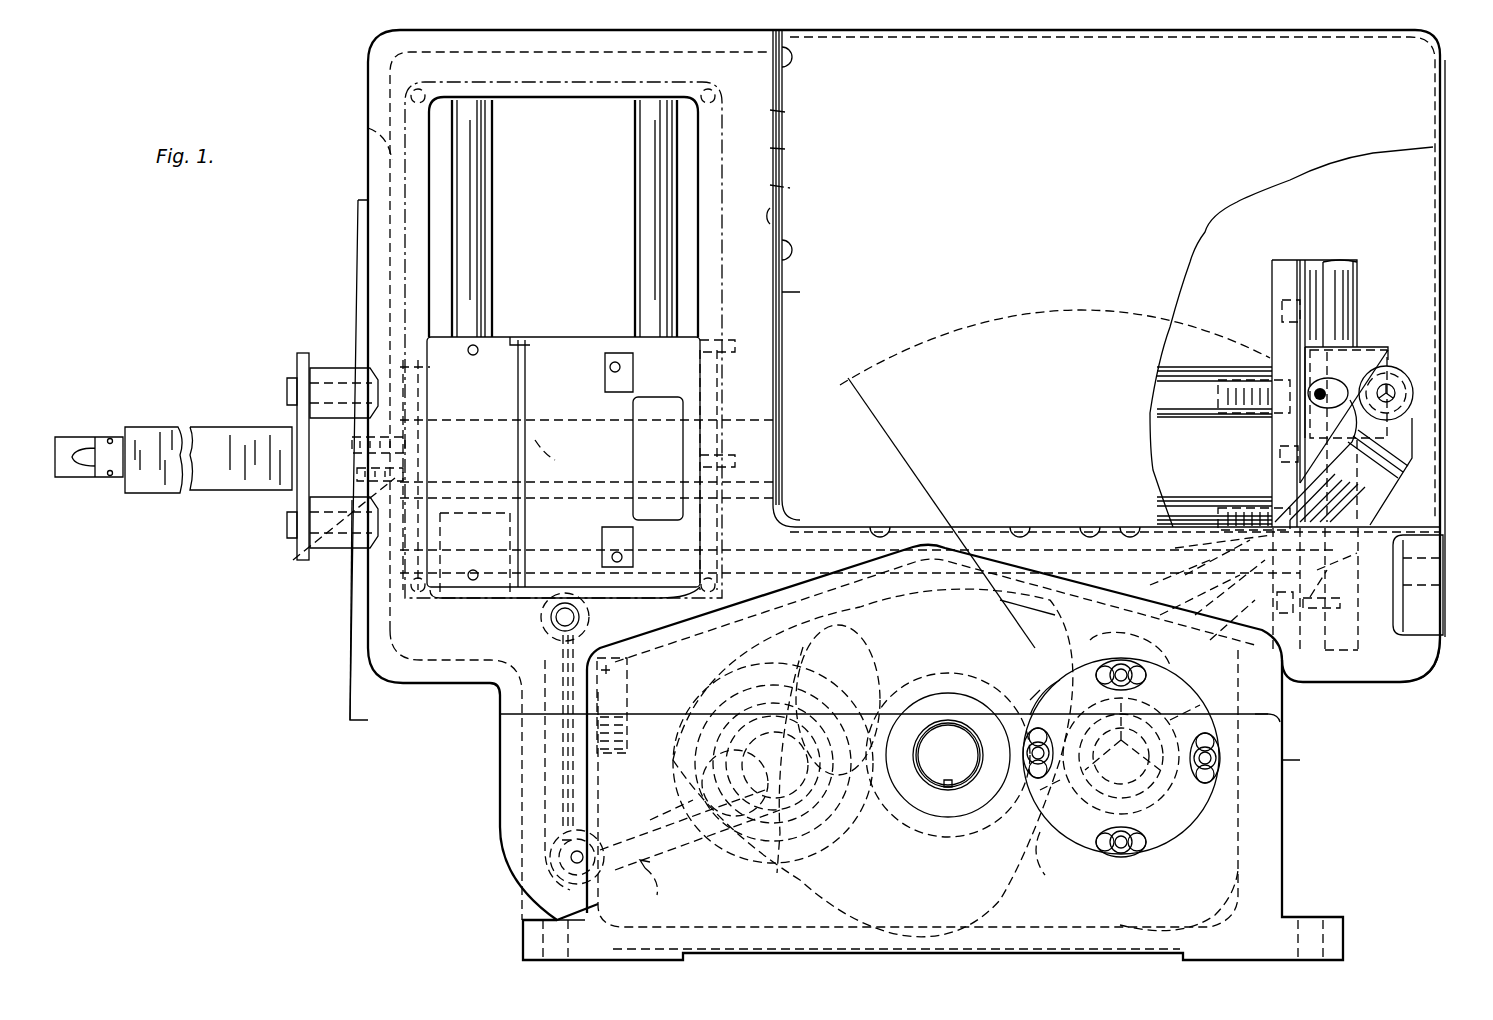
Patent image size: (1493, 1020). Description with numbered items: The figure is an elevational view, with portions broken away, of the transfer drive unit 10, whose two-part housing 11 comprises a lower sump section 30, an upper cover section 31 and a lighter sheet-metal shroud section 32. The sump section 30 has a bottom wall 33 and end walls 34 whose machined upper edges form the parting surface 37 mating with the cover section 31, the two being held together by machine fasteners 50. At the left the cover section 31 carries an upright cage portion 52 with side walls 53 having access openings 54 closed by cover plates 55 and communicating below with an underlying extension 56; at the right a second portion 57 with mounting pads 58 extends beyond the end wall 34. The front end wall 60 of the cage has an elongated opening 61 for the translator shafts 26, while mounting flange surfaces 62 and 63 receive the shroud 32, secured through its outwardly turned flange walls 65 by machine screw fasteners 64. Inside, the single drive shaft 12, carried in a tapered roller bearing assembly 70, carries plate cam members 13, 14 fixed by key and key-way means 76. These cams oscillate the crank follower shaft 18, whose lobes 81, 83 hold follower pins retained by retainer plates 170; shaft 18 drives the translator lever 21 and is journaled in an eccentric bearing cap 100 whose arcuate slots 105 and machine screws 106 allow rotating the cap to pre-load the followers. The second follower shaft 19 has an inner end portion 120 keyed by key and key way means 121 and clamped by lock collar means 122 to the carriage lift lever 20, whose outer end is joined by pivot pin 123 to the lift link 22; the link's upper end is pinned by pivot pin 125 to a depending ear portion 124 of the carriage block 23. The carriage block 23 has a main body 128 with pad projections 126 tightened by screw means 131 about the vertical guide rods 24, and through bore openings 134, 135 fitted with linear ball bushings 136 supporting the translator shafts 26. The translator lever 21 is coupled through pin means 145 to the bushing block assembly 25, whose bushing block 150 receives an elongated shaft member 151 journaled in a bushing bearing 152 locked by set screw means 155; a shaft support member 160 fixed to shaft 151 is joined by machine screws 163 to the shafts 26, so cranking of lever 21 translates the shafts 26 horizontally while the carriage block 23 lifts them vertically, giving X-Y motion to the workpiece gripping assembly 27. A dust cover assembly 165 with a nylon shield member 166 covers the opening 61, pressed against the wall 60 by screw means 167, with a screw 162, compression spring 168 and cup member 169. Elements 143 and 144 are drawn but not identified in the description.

The drive mechanism 10 is at (1438, 155).
The housing 11 is at (475, 700).
The input shaft 12 is at (948, 728).
The plate cam member 13 is at (985, 895).
The plate cam member 14 is at (1058, 612).
The crank follower shaft 18 is at (1185, 800).
The crank follower shaft 19 is at (778, 722).
The carriage lift lever 20 is at (659, 887).
The translator lever 21 is at (1404, 506).
The lift link 22 is at (530, 746).
The carriage block 23 is at (583, 326).
The guide rods 24 is at (493, 143).
The bushing block assembly 25 is at (1380, 348).
The translator shafts 26 is at (1178, 367).
The workpiece gripping assembly 27 is at (152, 412).
The lower sump section 30 is at (1294, 842).
The upper cover section 31 is at (1410, 694).
The shroud section 32 is at (1433, 96).
The bottom wall 33 is at (1215, 928).
The end walls 34 is at (1282, 763).
The part line 37 is at (1282, 722).
The machine fasteners 50 is at (615, 658).
The cage portion 52 is at (353, 59).
The side walls 53 is at (785, 149).
The openings 54 is at (785, 112).
The cover plates 55 is at (790, 188).
The underlying extension 56 is at (425, 655).
The second portion 57 is at (1415, 686).
The mounting pads 58 is at (1440, 527).
The front end wall 60 is at (368, 108).
The opening 61 is at (368, 165).
The mounting flange surfaces 62 is at (778, 218).
The mounting flange surfaces 63 is at (1130, 522).
The machine screw fasteners 64 is at (792, 57).
The flange walls 65 is at (800, 292).
The tapered roller bearing assembly 70 is at (942, 690).
The key and key-way means 76 is at (948, 790).
The lobe 81 is at (1175, 663).
The lobe 83 is at (1052, 858).
The bearing cap 100 is at (1190, 828).
The arcuate slots 105 is at (1028, 725).
The machine screws 106 is at (1112, 668).
The inner end portion 120 is at (780, 830).
The key and key way means 121 is at (710, 700).
The lock collar means 122 is at (870, 680).
The pivot pin 123 is at (550, 847).
The ear portion 124 is at (540, 618).
The pivot pin 125 is at (560, 645).
The pad projections 126 is at (605, 388).
The main body 128 is at (541, 340).
The screw means 131 is at (610, 364).
The through bore opening 134 is at (562, 456).
The through bore opening 135 is at (633, 460).
The linear ball bushing 136 is at (735, 345).
The slide block 143 is at (1340, 588).
The roller 144 is at (1413, 398).
The pin means 145 is at (1393, 385).
The bushing block 150 is at (1375, 360).
The shaft member 151 is at (1357, 275).
The bushing bearing means 152 is at (1300, 330).
The set screw means 155 is at (1320, 392).
The shaft support member 160 is at (1280, 245).
The screw 162 is at (1280, 452).
The machine screws 163 is at (1228, 405).
The dust cover assembly 165 is at (342, 279).
The shield member 166 is at (362, 655).
The screw means 167 is at (355, 478).
The compression spring 168 is at (352, 438).
The cup member 169 is at (298, 558).
The retainer plates 170 is at (1098, 479).